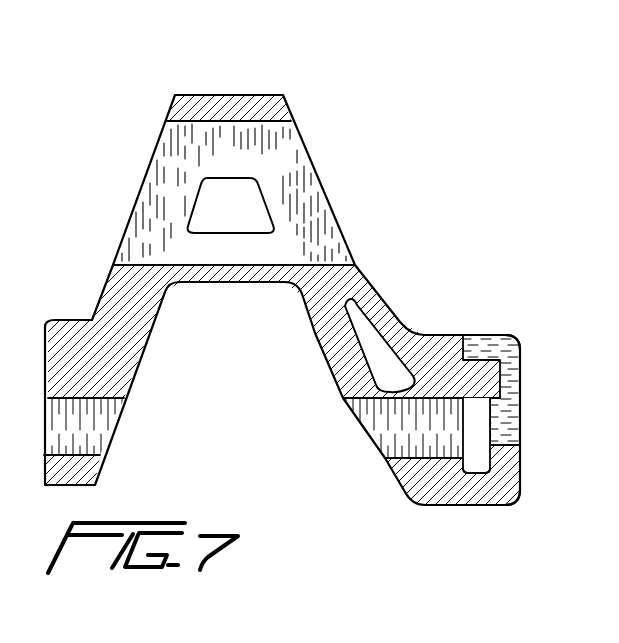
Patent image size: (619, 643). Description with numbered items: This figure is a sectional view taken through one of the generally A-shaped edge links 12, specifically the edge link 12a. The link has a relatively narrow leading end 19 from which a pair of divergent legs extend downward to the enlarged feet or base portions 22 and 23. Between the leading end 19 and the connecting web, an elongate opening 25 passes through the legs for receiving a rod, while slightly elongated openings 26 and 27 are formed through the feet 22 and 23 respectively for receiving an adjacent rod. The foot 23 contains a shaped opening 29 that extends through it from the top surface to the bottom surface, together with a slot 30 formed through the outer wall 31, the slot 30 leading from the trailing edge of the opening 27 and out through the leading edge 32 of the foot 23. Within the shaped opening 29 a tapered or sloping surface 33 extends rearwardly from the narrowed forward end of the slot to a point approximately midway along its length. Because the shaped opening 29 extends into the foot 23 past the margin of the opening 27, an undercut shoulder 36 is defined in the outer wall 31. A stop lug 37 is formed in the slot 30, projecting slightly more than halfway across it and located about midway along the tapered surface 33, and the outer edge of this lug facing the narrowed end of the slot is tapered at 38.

The edge link 12 is at (331, 300).
The edge link 12a is at (372, 277).
The leading end 19 is at (240, 95).
The foot 22 is at (78, 318).
The foot 23 is at (441, 333).
The elongate opening 25 is at (271, 122).
The elongated opening 26 is at (104, 400).
The elongated opening 27 is at (352, 400).
The shaped opening 29 is at (418, 504).
The slot 30 is at (491, 340).
The outer wall 31 is at (515, 467).
The leading edge 32 is at (455, 333).
The tapered surface 33 is at (462, 463).
The undercut shoulder 36 is at (465, 433).
The stop lug 37 is at (522, 347).
The tapered edge 38 is at (498, 416).